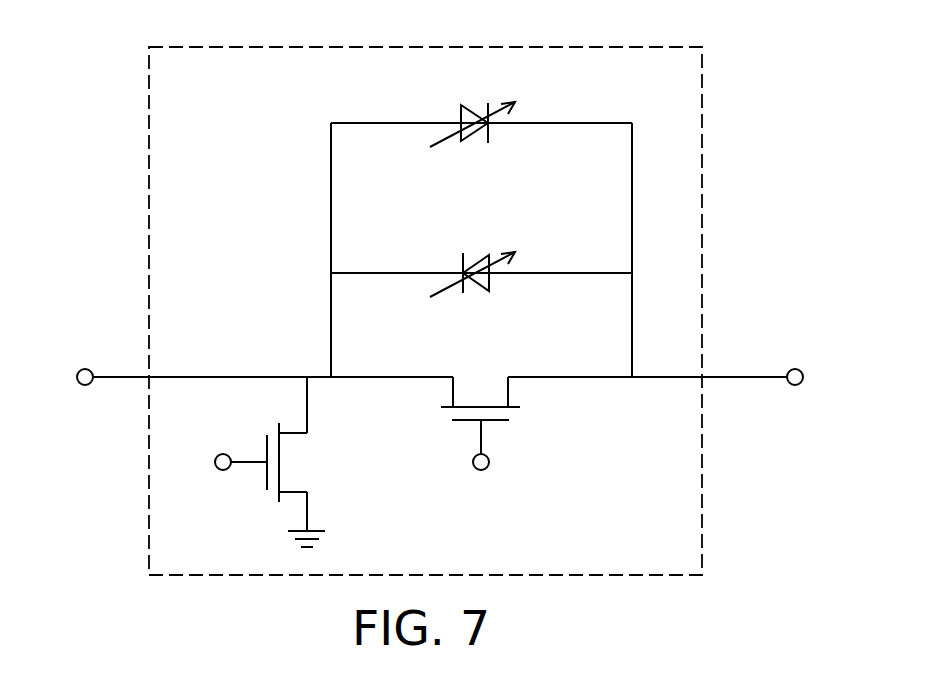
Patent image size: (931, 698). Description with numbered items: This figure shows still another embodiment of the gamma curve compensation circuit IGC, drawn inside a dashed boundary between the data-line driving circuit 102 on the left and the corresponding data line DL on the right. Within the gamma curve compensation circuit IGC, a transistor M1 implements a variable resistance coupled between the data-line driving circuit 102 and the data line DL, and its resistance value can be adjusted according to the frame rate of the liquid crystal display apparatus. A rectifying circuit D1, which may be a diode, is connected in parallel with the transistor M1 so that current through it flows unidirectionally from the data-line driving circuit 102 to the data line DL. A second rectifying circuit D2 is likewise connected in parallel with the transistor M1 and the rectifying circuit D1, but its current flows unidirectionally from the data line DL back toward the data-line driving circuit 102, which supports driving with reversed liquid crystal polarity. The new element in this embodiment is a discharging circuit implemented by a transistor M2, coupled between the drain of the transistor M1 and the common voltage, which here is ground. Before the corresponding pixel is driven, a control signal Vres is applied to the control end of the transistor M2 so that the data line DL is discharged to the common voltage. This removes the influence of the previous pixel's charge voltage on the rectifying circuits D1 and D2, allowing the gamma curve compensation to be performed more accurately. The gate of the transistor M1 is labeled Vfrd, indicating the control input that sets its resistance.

The data-line driving circuit 102 is at (60, 377).
The gamma curve compensation circuit IGC is at (613, 44).
The rectifying circuit D1 is at (472, 103).
The rectifying circuit D2 is at (472, 253).
The transistor M1 is at (480, 397).
The transistor M2 is at (302, 462).
The data line DL is at (812, 384).
The control signal Vres is at (213, 461).
The floating diffusion control voltage Vfrd is at (479, 482).